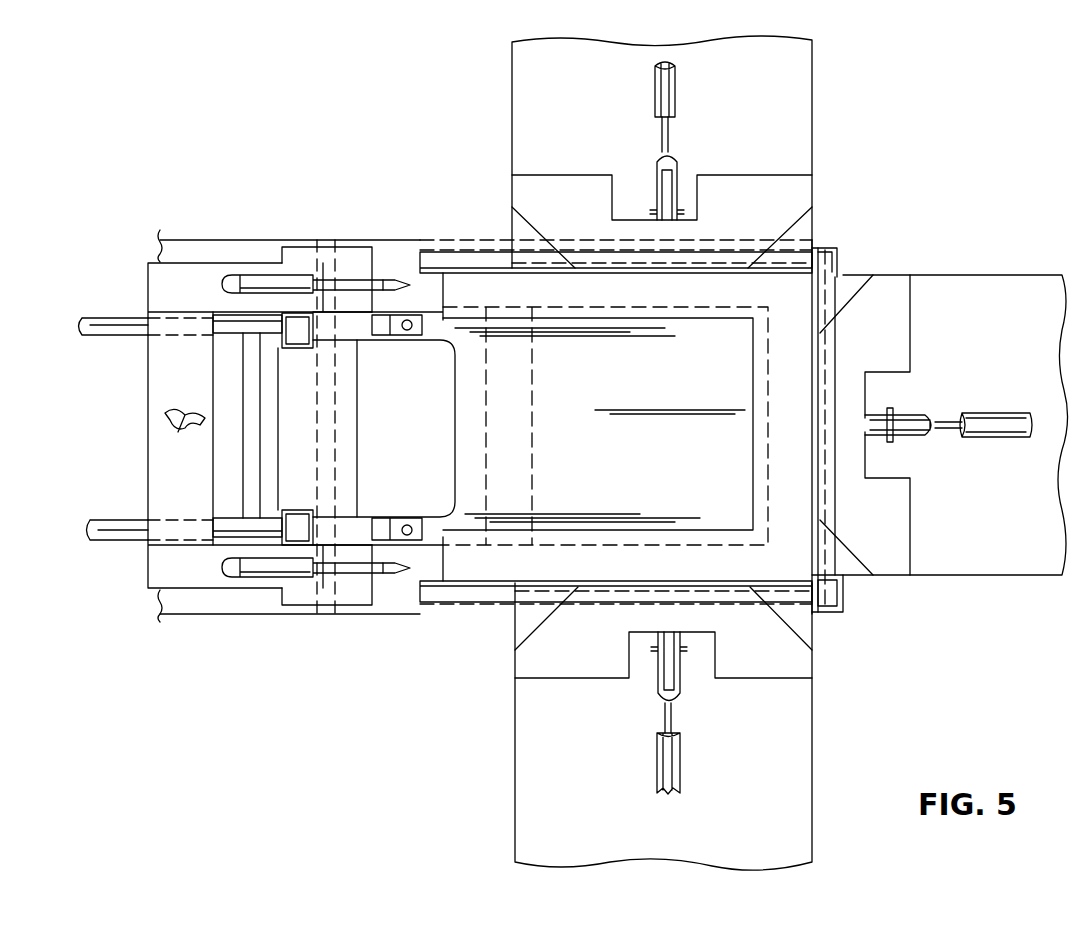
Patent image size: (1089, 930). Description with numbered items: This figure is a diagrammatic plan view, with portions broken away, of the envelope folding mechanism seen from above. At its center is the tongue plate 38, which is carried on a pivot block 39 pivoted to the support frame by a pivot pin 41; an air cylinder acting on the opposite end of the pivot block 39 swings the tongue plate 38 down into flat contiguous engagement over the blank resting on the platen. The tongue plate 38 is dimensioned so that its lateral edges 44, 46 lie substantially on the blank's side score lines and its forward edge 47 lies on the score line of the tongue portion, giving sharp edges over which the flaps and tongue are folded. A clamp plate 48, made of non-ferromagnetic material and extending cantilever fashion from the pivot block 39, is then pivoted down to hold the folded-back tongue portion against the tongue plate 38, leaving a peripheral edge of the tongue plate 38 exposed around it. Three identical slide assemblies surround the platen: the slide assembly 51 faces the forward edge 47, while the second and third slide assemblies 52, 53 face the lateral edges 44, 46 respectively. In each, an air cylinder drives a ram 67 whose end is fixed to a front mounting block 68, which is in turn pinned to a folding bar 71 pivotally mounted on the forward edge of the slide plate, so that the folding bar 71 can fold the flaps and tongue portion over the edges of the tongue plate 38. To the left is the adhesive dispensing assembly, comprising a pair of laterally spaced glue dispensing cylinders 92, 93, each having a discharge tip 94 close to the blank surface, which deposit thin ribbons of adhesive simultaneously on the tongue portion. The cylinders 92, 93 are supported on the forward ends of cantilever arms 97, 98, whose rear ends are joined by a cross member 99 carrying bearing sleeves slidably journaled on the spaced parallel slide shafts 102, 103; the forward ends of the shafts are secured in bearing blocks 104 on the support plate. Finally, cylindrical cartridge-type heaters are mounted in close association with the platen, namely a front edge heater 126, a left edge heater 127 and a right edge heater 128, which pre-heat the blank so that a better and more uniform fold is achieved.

The tongue plate 38 is at (762, 302).
The pivot block 39 is at (355, 530).
The pivot pin 41 is at (320, 415).
The lateral edge 44 is at (676, 270).
The lateral edge 46 is at (758, 585).
The forward edge 47 is at (812, 552).
The clamp plate 48 is at (639, 459).
The slide assembly 51 is at (988, 264).
The second slide assembly 52 is at (497, 99).
The third slide assembly 53 is at (828, 722).
The ram 67 is at (668, 90).
The front mounting block 68 is at (673, 170).
The folding bar 71 is at (758, 219).
The glue dispensing cylinder 92 is at (343, 278).
The glue dispensing cylinder 93 is at (355, 575).
The discharge tip 94 is at (400, 283).
The cantilever arm 97 is at (178, 285).
The cantilever arm 98 is at (200, 578).
The cross member 99 is at (160, 385).
The slide shaft 102 is at (100, 325).
The slide shaft 103 is at (112, 530).
The bearing block 104 is at (355, 337).
The front edge heater 126 is at (825, 583).
The left edge heater 127 is at (820, 255).
The right edge heater 128 is at (820, 600).